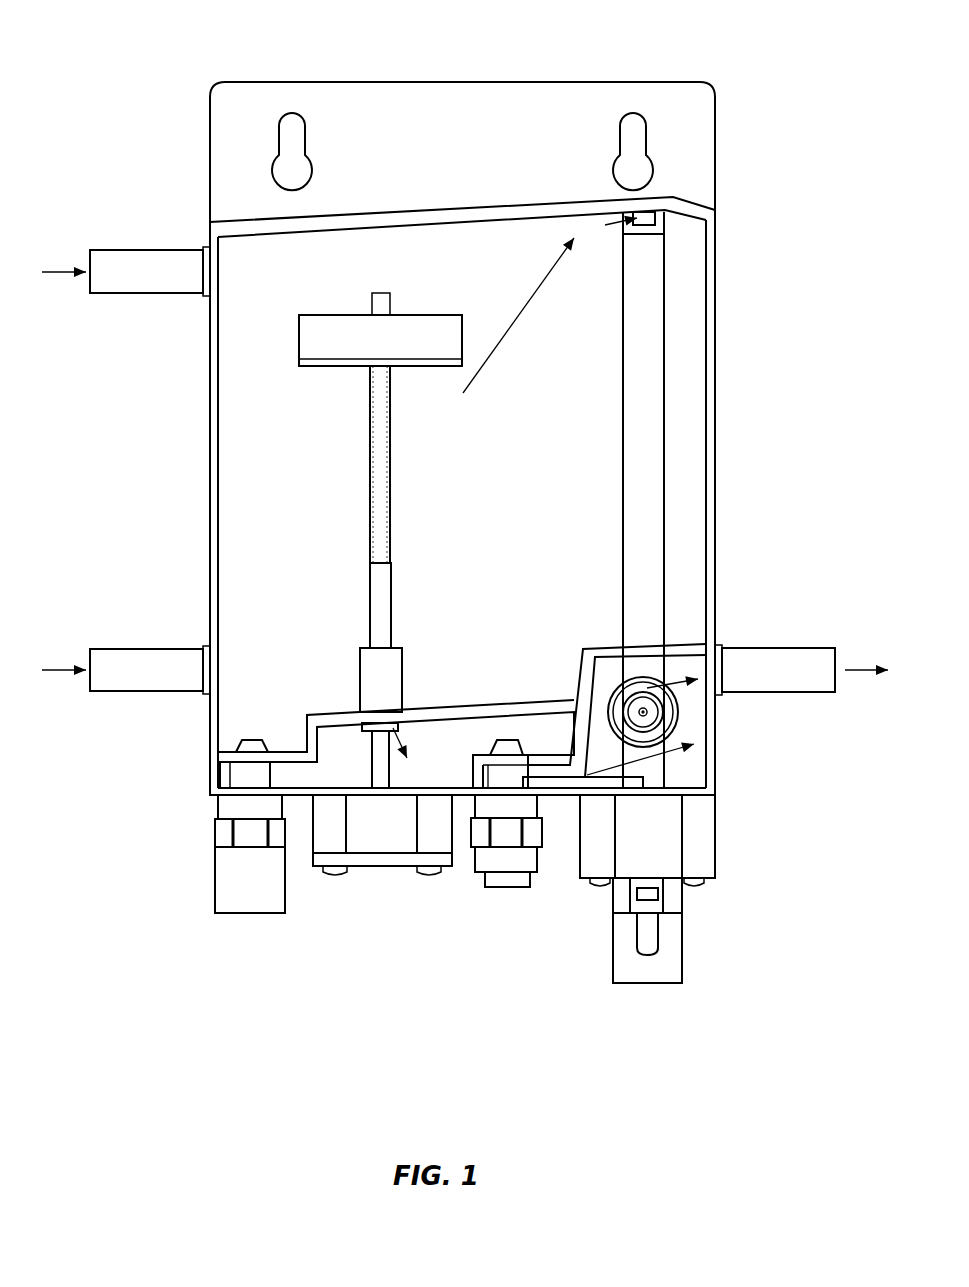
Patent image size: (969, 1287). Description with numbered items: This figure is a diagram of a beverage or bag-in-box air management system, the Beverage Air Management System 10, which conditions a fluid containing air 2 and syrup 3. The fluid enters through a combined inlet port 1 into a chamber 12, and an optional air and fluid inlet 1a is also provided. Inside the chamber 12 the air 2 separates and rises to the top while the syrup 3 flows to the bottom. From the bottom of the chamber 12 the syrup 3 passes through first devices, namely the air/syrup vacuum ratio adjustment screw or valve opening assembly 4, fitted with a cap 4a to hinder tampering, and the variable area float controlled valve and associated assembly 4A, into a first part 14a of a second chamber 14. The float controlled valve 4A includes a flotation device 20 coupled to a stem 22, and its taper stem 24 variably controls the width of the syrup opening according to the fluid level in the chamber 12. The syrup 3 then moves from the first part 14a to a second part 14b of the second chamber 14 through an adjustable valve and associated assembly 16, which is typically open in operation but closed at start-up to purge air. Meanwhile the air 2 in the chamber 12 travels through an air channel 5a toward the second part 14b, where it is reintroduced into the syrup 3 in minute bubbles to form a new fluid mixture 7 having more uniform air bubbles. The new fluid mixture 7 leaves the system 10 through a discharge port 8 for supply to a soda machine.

The combined inlet port 1 is at (138, 677).
The optional air and fluid inlet 1a is at (148, 280).
The air 2 is at (612, 229).
The syrup 3 is at (359, 746).
The air/syrup vacuum ratio adjustment screw or valve opening assembly 4 is at (248, 777).
The cap 4a is at (215, 887).
The variable area float controlled valve and associated assembly 4A is at (392, 662).
The air channel 5a is at (655, 393).
The new fluid mixture 7 is at (690, 716).
The discharge port 8 is at (806, 678).
The Beverage Air Management System 10 is at (516, 401).
The chamber 12 is at (232, 521).
The second chamber 14 is at (606, 677).
The first part of the second chamber 14a is at (430, 770).
The second part of the second chamber 14b is at (605, 670).
The adjustable valve and associated assembly 16 is at (513, 862).
The flotation device 20 is at (452, 338).
The stem 22 is at (372, 407).
The taper stem 24 is at (369, 612).